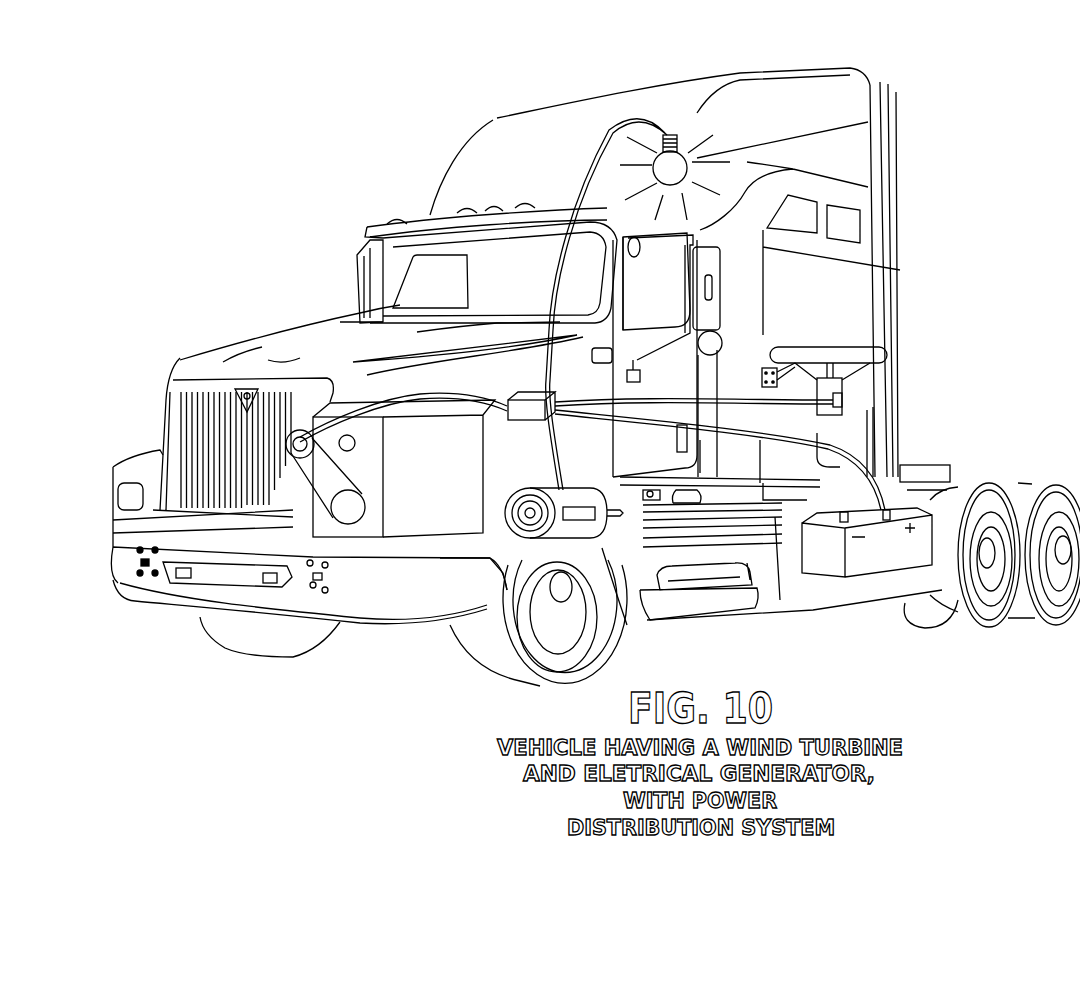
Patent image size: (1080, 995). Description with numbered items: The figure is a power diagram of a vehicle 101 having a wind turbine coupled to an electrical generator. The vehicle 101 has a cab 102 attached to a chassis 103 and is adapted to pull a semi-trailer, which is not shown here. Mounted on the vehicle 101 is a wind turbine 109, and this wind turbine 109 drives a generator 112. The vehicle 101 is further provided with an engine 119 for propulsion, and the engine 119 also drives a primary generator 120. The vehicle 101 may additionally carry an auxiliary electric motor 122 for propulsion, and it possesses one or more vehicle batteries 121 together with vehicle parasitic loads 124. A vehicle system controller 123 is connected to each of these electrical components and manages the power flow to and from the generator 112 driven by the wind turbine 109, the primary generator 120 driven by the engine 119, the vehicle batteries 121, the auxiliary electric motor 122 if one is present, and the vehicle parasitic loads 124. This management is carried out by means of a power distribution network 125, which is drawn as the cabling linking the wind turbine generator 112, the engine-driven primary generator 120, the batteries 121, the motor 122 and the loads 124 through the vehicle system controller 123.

The vehicle 101 is at (290, 333).
The cab 102 is at (359, 229).
The chassis 103 is at (468, 666).
The wind turbine 109 is at (890, 356).
The generator 112 is at (843, 398).
The engine 119 is at (433, 517).
The primary generator 120 is at (288, 434).
The vehicle batteries 121 is at (920, 514).
The auxiliary electric motor 122 is at (608, 532).
The vehicle system controller 123 is at (558, 418).
The vehicle parasitic loads 124 is at (687, 163).
The power distribution network 125 is at (588, 168).